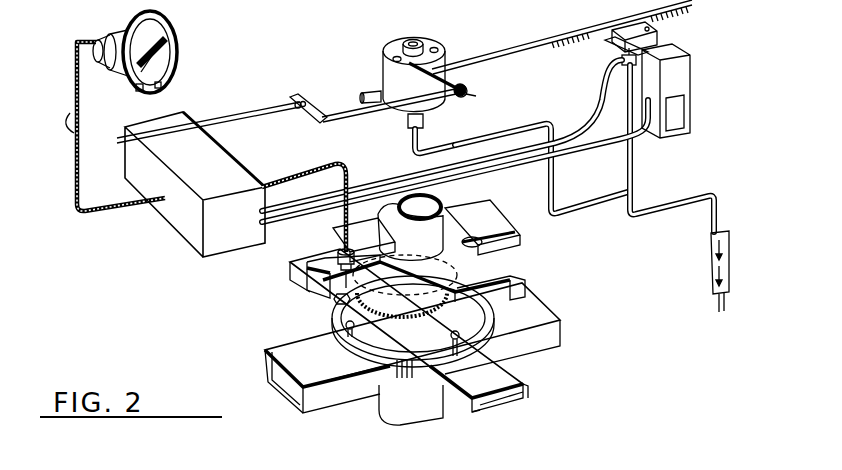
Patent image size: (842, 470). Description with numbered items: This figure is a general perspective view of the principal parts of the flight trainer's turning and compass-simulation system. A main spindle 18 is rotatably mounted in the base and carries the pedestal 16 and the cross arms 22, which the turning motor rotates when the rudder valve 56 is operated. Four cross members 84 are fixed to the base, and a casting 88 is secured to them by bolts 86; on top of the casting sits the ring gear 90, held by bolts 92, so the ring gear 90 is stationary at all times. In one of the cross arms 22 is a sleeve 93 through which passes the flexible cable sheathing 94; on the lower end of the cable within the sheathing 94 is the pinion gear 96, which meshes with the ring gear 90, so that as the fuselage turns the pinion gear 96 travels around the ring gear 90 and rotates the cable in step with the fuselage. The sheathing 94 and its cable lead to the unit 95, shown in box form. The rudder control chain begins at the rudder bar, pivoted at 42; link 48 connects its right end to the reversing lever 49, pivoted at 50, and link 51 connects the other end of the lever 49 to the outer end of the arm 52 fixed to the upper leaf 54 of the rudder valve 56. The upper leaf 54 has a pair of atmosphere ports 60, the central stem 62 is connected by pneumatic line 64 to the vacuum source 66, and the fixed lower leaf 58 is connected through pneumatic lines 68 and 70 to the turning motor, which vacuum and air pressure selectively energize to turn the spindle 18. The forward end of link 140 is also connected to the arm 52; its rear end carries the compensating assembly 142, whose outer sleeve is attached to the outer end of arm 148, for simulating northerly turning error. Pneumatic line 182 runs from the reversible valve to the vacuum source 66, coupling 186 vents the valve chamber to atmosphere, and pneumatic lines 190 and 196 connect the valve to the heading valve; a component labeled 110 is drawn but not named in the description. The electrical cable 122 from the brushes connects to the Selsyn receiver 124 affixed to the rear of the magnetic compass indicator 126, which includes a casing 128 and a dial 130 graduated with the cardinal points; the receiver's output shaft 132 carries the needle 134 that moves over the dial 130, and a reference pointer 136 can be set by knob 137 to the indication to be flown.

The pedestal 16 is at (436, 206).
The main spindle 18 is at (455, 248).
The cross arms 22 is at (362, 222).
The rudder bar pivot 42 is at (471, 243).
The link 48 is at (246, 108).
The reversing lever 49 is at (294, 108).
The reversing lever pivot 50 is at (304, 98).
The link 51 is at (336, 114).
The arm 52 is at (458, 82).
The upper leaf of the rudder valve 54 is at (408, 44).
The rudder valve 56 is at (378, 76).
The lower leaf of the rudder valve 58 is at (423, 120).
The atmosphere ports 60 is at (392, 58).
The central stem 62 is at (409, 124).
The pneumatic line 64 is at (478, 143).
The source of vacuum 66 is at (729, 262).
The pneumatic line 68 is at (366, 103).
The pneumatic line 70 is at (471, 95).
The cross members 84 is at (283, 348).
The bolts 86 is at (346, 329).
The casting 88 is at (470, 326).
The ring gear 90 is at (388, 300).
The bolts 92 is at (402, 300).
The sleeve 93 is at (336, 250).
The flexible cable sheathing 94 is at (276, 180).
The unit 95 is at (193, 227).
The pinion gear 96 is at (334, 302).
The housing 110 is at (690, 116).
The cable 122 is at (74, 104).
The Selsyn receiver 124 is at (110, 66).
The magnetic compass indicator 126 is at (171, 58).
The casing 128 is at (166, 18).
The dial 130 is at (168, 48).
The output shaft 132 is at (166, 62).
The needle 134 is at (138, 18).
The reference pointer 136 is at (158, 90).
The knob 137 is at (138, 92).
The link 140 is at (518, 48).
The compensating assembly 142 is at (663, 27).
The arm 148 is at (608, 42).
The pneumatic line 182 is at (634, 146).
The coupling 186 is at (622, 60).
The pneumatic line 190 is at (601, 97).
The pneumatic line 196 is at (592, 146).